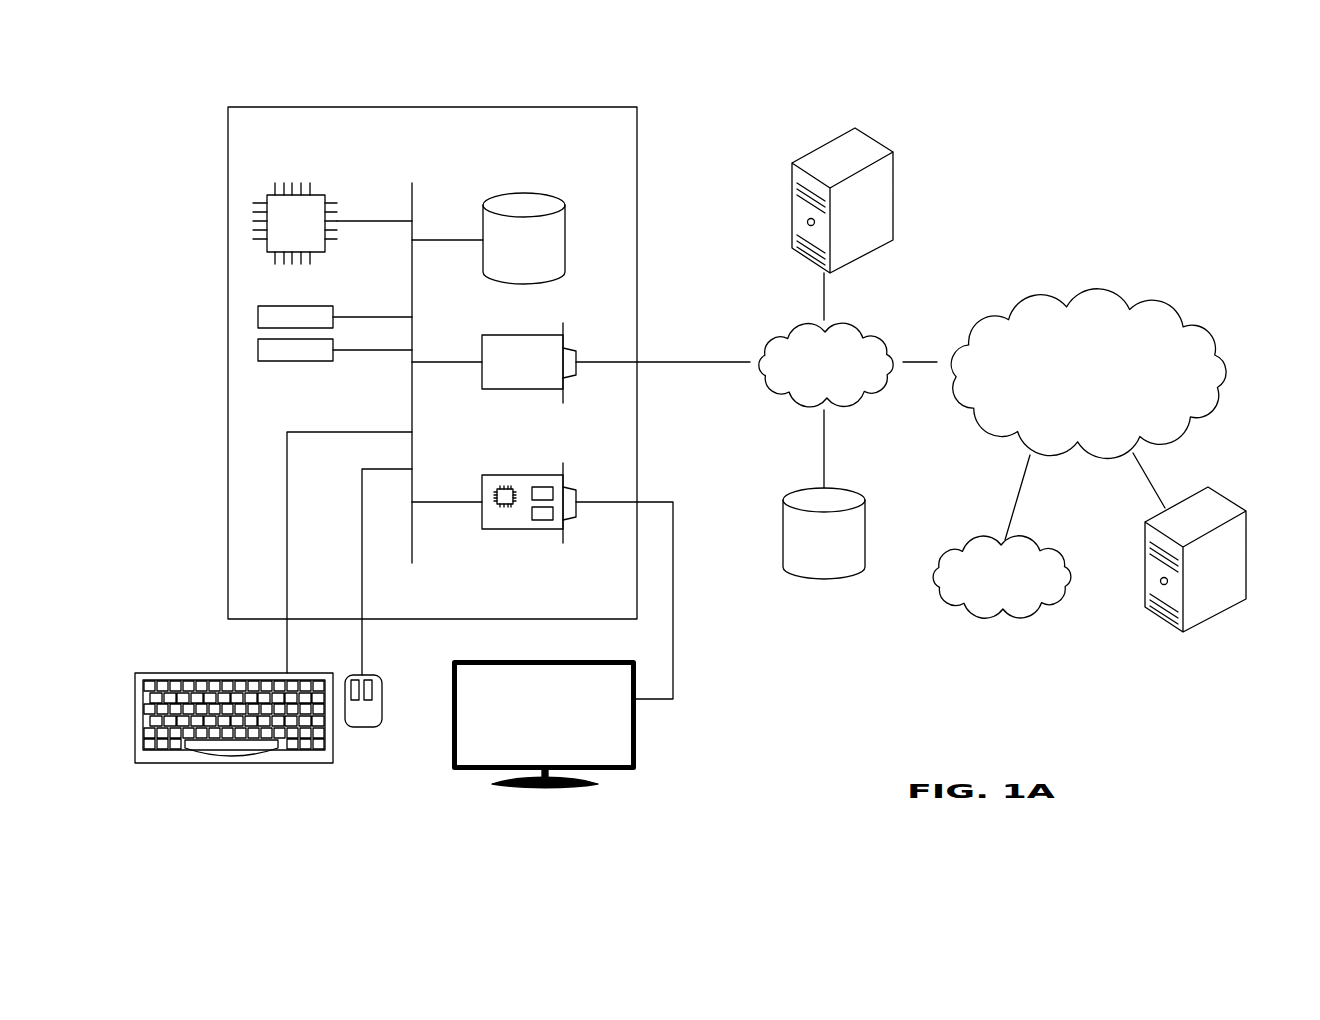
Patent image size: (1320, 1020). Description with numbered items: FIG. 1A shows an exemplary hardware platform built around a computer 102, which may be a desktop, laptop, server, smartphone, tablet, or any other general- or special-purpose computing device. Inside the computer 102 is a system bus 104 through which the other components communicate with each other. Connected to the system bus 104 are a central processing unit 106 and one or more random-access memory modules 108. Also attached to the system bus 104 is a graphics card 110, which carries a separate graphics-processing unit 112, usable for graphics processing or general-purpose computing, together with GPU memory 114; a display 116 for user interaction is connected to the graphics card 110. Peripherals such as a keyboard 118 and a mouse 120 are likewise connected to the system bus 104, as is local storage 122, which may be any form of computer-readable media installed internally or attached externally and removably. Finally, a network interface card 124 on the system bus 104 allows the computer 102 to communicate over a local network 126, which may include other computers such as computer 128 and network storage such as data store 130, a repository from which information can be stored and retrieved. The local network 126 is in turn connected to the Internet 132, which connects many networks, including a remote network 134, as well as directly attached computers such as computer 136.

The computer 102 is at (592, 108).
The system bus 104 is at (412, 192).
The central processing unit 106 is at (318, 187).
The random-access memory modules 108 is at (333, 313).
The graphics card 110 is at (482, 487).
The graphics-processing unit 112 is at (505, 508).
The GPU memory 114 is at (540, 520).
The display 116 is at (637, 752).
The keyboard 118 is at (237, 763).
The mouse 120 is at (358, 727).
The local storage 122 is at (567, 222).
The network interface card 124 is at (482, 343).
The local network 126 is at (877, 322).
The computer 128 is at (877, 140).
The data store 130 is at (855, 492).
The Internet 132 is at (1130, 283).
The remote network 134 is at (1055, 532).
The computer 136 is at (1222, 490).